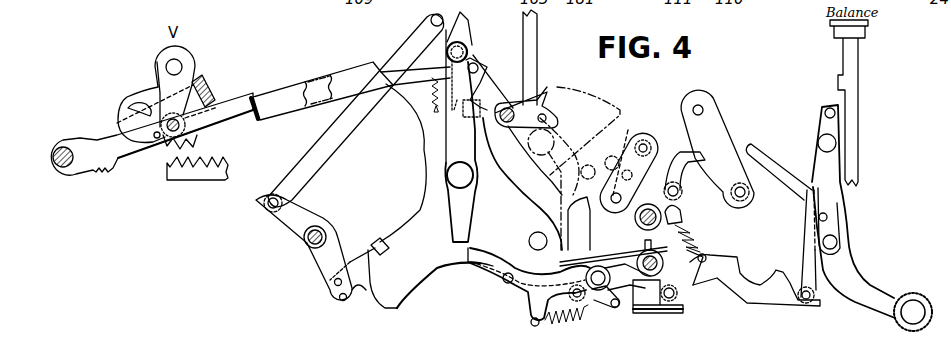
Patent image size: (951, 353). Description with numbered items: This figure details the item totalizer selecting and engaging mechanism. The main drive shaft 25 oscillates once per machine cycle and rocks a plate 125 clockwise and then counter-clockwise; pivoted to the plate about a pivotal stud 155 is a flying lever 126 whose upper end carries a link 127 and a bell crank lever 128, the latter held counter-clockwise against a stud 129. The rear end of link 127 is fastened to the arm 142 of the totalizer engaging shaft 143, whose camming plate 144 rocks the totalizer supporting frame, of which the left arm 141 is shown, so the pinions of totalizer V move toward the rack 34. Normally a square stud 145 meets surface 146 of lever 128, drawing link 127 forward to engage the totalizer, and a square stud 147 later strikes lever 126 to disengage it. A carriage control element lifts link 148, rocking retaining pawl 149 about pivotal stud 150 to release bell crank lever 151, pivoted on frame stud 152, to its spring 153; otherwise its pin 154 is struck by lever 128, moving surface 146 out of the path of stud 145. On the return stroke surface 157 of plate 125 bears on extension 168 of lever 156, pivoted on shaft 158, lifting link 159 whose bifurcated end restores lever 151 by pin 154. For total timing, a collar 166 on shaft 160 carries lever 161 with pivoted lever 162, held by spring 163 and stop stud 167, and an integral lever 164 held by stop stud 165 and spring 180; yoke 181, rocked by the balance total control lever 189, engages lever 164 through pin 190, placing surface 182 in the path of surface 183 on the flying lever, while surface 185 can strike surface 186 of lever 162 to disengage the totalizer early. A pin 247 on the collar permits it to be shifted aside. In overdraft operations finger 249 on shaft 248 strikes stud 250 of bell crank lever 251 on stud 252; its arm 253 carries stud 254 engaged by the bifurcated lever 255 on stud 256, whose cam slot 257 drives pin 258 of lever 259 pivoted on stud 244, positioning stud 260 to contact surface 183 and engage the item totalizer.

The main drive shaft 25 is at (529, 241).
The rack 34 is at (188, 182).
The plate 125 is at (412, 282).
The flying lever 126 is at (446, 142).
The link 127 is at (292, 88).
The bell crank lever 128 is at (465, 27).
The stud 129 is at (474, 86).
The left arm 141 is at (100, 142).
The arm 142 is at (198, 74).
The totalizer engaging shaft 143 is at (180, 66).
The camming plate 144 is at (150, 78).
The square stud 145 is at (378, 238).
The surface 146 is at (389, 90).
The square stud 147 is at (474, 125).
The link 148 is at (538, 30).
The retaining pawl 149 is at (548, 90).
The pivotal stud 150 is at (507, 108).
The bell crank lever 151 is at (477, 59).
The frame supported stud 152 is at (484, 64).
The spring 153 is at (428, 100).
The pin 154 is at (430, 18).
The pivotal stud 155 is at (447, 176).
The lever 156 is at (318, 260).
The surface 157 is at (362, 300).
The frame supported shaft 158 is at (304, 238).
The link 159 is at (318, 135).
The shaft 160 is at (633, 292).
The lever 161 is at (520, 292).
The lever 162 is at (568, 207).
The spring 163 is at (528, 325).
The lever 164 is at (712, 290).
The stop stud 165 is at (586, 278).
The collar 166 is at (664, 264).
The stop stud 167 is at (552, 320).
The extension 168 is at (366, 255).
The spring 180 is at (684, 224).
The yoke 181 is at (662, 314).
The surface 182 is at (466, 252).
The surface 183 is at (470, 226).
The surface 185 is at (452, 222).
The surface 186 is at (554, 184).
The total control lever 189 is at (767, 304).
The pin 190 is at (666, 300).
The stud 244 is at (648, 142).
The pin 247 is at (702, 248).
The shaft 248 is at (900, 318).
The finger 249 is at (848, 252).
The stud 250 is at (748, 196).
The bell crank lever 251 is at (712, 110).
The frame supported stud 252 is at (705, 107).
The arm 253 is at (740, 148).
The stud 254 is at (680, 190).
The lever 255 is at (680, 153).
The stud 256 is at (645, 232).
The cam slot 257 is at (636, 120).
The pin 258 is at (637, 219).
The lever 259 is at (607, 158).
The stud 260 is at (622, 198).